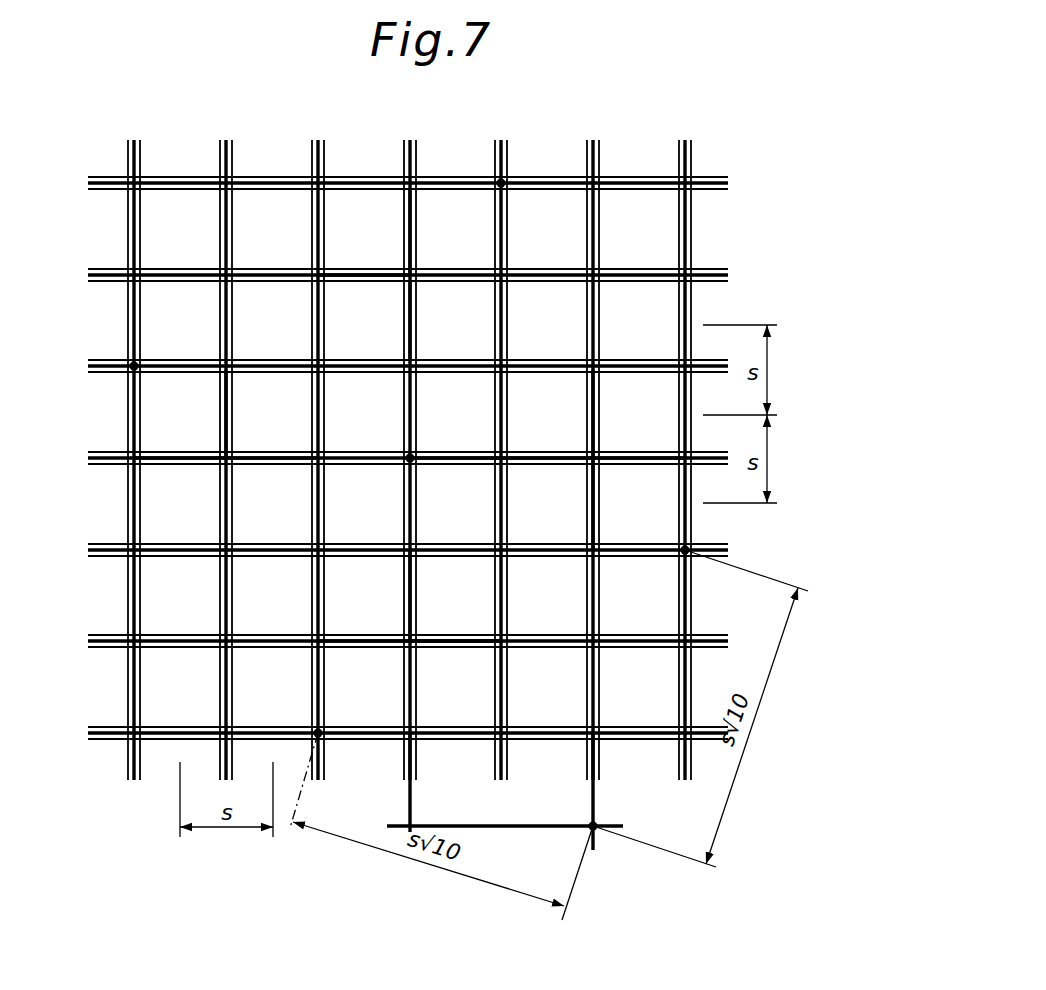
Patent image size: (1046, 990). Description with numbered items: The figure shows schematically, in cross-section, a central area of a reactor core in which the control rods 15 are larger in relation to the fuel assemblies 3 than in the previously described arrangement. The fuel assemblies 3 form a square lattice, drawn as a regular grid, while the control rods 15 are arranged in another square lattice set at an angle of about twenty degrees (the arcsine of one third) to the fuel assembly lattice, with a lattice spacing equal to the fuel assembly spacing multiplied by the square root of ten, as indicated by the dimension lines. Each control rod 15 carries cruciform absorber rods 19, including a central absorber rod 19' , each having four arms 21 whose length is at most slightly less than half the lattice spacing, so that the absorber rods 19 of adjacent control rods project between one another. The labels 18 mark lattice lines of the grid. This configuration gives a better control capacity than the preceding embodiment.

The fuel assembly 3 is at (170, 158).
The control rod 15 is at (140, 305).
The grid strip 18 is at (132, 136).
The absorber rod 19 is at (409, 460).
The strip segment 19' is at (455, 438).
The arm 21 is at (373, 271).